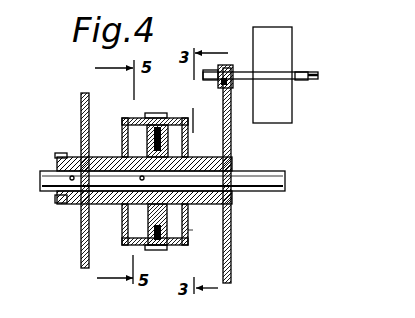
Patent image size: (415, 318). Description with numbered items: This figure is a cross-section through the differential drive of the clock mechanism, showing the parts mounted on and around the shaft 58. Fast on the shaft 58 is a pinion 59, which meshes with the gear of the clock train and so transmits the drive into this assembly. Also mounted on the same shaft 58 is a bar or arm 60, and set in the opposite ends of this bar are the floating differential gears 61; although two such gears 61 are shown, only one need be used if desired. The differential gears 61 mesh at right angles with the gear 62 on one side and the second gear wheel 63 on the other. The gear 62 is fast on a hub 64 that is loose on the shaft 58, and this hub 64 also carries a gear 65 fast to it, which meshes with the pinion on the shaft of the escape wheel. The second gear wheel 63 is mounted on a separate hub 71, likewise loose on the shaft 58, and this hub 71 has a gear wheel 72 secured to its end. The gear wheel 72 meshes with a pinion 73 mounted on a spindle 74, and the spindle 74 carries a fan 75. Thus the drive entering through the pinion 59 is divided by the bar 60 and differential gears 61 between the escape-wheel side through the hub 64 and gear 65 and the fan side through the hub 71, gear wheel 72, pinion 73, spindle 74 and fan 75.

The shaft 58 is at (42, 178).
The pinion 59 is at (60, 153).
The bar or arm 60 is at (168, 152).
The floating differential gears 61 is at (135, 118).
The gear 62 is at (124, 223).
The second gear wheel 63 is at (193, 218).
The hub 64 is at (78, 200).
The gear 65 is at (89, 114).
The hub 71 is at (201, 208).
The gear wheel 72 is at (232, 250).
The pinion 73 is at (219, 84).
The spindle 74 is at (297, 80).
The fan 75 is at (288, 40).